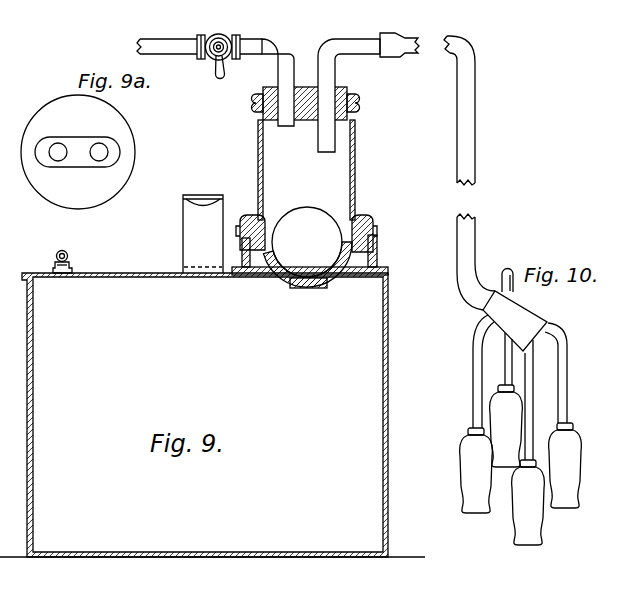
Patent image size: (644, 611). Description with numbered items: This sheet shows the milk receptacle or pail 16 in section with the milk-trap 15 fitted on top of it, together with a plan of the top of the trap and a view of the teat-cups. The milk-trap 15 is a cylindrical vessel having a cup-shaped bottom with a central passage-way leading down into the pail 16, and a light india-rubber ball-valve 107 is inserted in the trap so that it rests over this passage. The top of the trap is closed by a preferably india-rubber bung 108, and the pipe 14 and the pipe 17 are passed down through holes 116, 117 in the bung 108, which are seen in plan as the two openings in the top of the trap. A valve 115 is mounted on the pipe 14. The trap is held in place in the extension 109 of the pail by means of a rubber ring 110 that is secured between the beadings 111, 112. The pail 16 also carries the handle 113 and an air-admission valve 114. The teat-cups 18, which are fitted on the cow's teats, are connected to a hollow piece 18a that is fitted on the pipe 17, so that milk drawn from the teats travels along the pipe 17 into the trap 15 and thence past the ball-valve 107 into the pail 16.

In FIG. 9, the pipe 14 is at (190, 56).
In FIG. 9, the milk-trap 15 is at (317, 170).
In FIG. 9, the milk receptacle or pail 16 is at (205, 415).
In FIG. 9, the pipe 17 is at (476, 126).
In FIG. 10, the pipe 17 is at (470, 250).
In FIG. 10, the teat-cups 18 is at (521, 430).
In FIG. 10, the hollow piece 18a is at (515, 310).
In FIG. 9, the india-rubber ball-valve 107 is at (307, 242).
In FIG. 9, the india-rubber bung 108 is at (305, 124).
In FIG. 9A, the india-rubber bung 108 is at (77, 141).
In FIG. 9, the extension of the pail 109 is at (362, 265).
In FIG. 9, the rubber ring 110 is at (370, 242).
In FIG. 9, the beading 111 is at (255, 221).
In FIG. 9, the beading 112 is at (262, 250).
In FIG. 9, the handle of the pail 113 is at (203, 234).
In FIG. 9, the air-admission valve 114 is at (72, 267).
In FIG. 9, the valve 115 is at (216, 40).
In FIG. 9, the hole in the bung 116 is at (296, 92).
In FIG. 9A, the hole in the bung 116 is at (57, 161).
In FIG. 9, the hole in the bung 117 is at (334, 110).
In FIG. 9A, the hole in the bung 117 is at (98, 161).